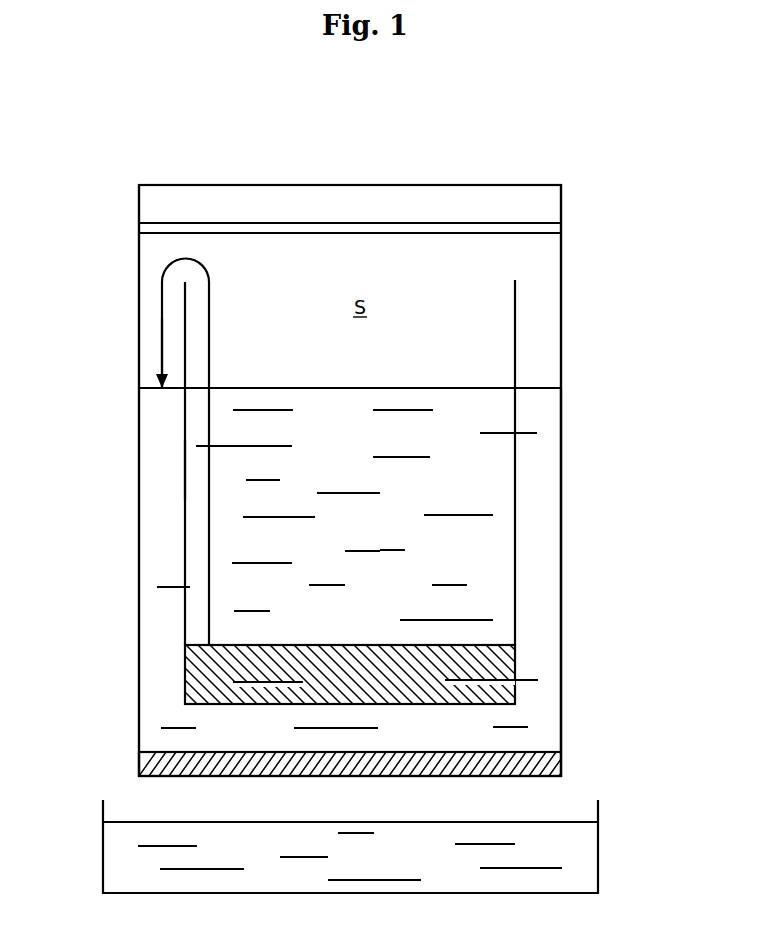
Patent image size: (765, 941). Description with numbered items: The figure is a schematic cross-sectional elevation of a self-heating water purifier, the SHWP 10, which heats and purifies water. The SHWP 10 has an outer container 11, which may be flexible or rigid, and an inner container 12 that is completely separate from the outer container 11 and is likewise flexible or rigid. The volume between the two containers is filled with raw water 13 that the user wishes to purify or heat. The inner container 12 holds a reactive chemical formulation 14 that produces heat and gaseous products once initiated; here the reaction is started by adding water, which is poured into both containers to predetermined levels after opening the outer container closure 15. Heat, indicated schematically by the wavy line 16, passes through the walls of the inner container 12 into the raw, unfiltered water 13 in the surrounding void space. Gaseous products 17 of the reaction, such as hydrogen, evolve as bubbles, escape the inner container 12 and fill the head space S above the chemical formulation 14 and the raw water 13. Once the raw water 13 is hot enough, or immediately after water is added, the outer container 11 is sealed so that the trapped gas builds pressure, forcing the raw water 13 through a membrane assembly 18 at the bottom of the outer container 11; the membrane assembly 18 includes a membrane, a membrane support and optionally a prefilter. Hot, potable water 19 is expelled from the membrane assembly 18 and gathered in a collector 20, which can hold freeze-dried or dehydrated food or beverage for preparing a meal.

The SHWP 10 is at (317, 179).
The outer container 11 is at (561, 277).
The inner container 12 is at (515, 510).
The raw water 13 is at (539, 577).
The reactive chemical formulation 14 is at (493, 660).
The outer container closure 15 is at (561, 230).
The wavy line 16 is at (185, 472).
The gaseous products 17 is at (162, 318).
The membrane assembly 18 is at (540, 765).
The hot, potable water 19 is at (125, 838).
The collector 20 is at (598, 858).